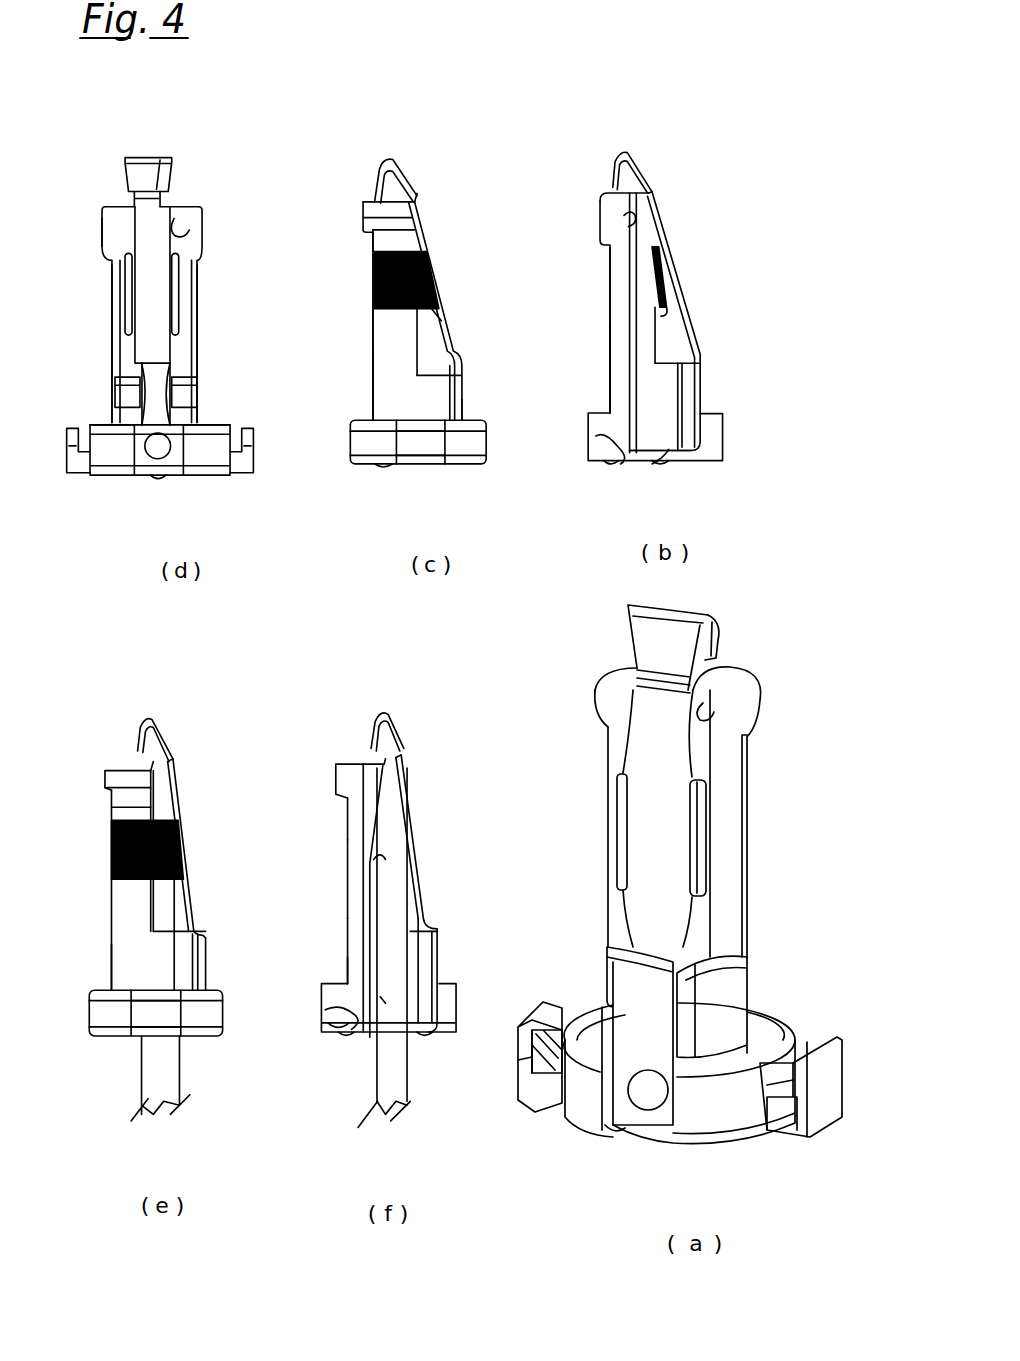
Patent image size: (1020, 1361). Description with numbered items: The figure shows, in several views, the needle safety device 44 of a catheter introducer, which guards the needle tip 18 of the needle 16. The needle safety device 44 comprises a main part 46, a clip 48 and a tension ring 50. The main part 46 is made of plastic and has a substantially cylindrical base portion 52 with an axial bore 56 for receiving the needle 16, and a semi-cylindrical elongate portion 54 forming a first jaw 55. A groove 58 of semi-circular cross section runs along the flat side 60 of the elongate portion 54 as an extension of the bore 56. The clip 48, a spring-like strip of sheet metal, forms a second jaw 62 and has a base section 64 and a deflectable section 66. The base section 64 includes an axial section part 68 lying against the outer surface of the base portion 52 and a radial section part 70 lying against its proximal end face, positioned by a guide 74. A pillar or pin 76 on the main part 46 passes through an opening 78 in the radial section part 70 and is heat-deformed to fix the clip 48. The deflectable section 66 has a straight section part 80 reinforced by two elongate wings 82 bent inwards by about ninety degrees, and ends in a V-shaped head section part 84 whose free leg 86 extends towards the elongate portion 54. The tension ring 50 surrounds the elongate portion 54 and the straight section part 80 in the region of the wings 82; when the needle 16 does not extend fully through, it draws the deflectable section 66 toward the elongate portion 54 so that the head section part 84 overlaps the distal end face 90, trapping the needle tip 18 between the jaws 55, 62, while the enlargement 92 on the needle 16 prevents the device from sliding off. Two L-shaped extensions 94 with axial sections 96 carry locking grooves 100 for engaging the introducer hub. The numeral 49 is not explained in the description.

The needle 16 is at (252, 1089).
The needle tip 18 is at (310, 742).
The needle safety device 44 is at (205, 152).
The main part 46 is at (370, 340).
The clip 48 is at (155, 860).
The inner contact surface 49 is at (195, 392).
The tension ring 50 is at (375, 260).
The base portion 52 is at (185, 405).
The elongate portion 54 is at (95, 250).
The first jaw 55 is at (176, 285).
The bore 56 is at (526, 803).
The groove 58 is at (170, 215).
The flat side 60 is at (100, 235).
The second jaw 62 is at (95, 315).
The base section 64 is at (160, 370).
The deflectable section 66 is at (172, 250).
The axial section part 68 is at (130, 365).
The radial section part 70 is at (545, 763).
The guide 74 is at (701, 828).
The pillar or pin 76 is at (392, 783).
The opening 78 is at (590, 400).
The straight section part 80 is at (140, 300).
The elongate wings 82 is at (165, 270).
The head section part 84 is at (125, 158).
The free leg 86 is at (152, 168).
The distal end face 90 is at (100, 190).
The enlargement 92 is at (312, 1013).
The L-shaped extensions 94 is at (80, 412).
The axial section 96 is at (453, 784).
The locking grooves 100 is at (60, 385).